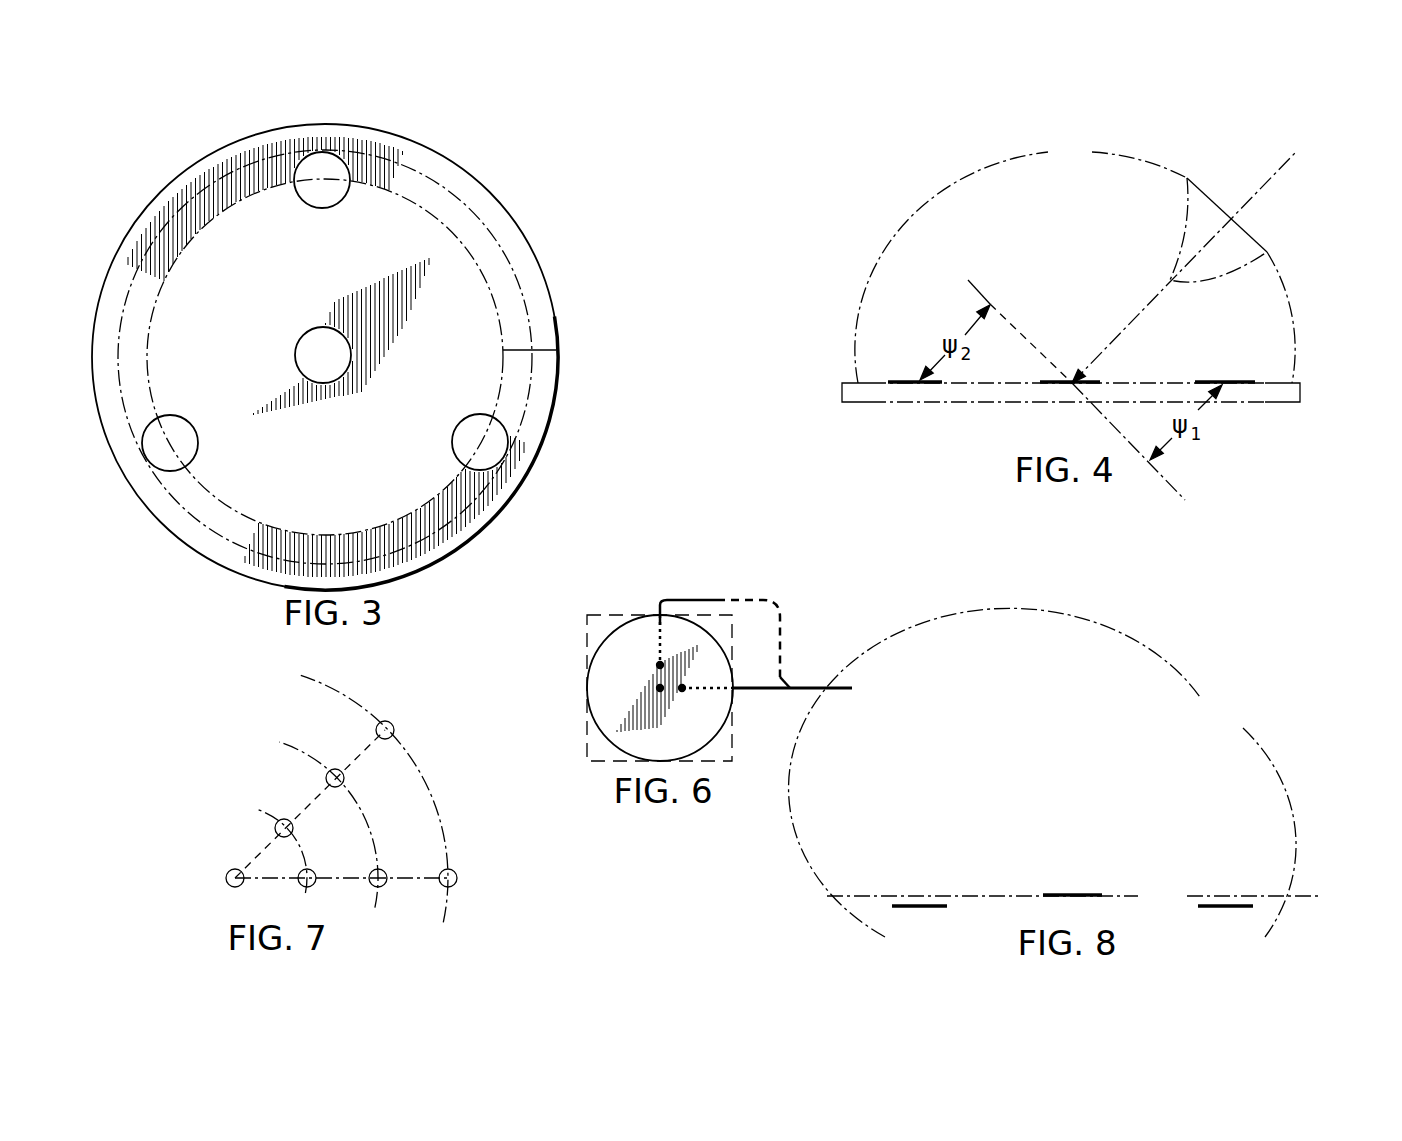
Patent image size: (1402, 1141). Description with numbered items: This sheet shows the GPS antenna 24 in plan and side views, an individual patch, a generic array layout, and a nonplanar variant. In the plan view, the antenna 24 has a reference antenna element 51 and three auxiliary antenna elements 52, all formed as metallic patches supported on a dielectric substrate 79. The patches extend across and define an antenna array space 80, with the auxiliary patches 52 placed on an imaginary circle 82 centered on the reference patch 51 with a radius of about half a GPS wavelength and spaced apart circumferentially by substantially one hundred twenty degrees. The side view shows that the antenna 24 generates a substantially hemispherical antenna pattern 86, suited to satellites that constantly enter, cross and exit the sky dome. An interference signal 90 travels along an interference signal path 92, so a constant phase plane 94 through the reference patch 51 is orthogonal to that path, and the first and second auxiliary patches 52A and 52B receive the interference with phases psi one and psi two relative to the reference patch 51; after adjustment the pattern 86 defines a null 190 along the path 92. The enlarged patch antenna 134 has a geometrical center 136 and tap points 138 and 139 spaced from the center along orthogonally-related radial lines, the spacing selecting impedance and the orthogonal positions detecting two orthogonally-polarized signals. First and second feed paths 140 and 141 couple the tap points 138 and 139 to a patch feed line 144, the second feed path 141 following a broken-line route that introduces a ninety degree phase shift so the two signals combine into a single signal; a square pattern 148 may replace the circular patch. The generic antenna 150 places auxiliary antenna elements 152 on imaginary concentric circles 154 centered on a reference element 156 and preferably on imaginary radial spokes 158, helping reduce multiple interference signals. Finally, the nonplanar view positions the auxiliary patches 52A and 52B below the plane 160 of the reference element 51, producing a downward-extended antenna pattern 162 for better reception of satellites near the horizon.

In FIG. 3, the antenna 24 is at (520, 213).
In FIG. 4, the antenna 24 is at (830, 375).
In FIG. 3, the reference antenna element 51 is at (352, 357).
In FIG. 4, the reference antenna element 51 is at (1042, 383).
In FIG. 8, the reference antenna element 51 is at (1067, 895).
In FIG. 3, the auxiliary antenna elements 52 is at (497, 421).
In FIG. 4, the first auxiliary patch 52A is at (1240, 382).
In FIG. 8, the first auxiliary patch 52A is at (1238, 903).
In FIG. 4, the second auxiliary patch 52B is at (912, 380).
In FIG. 8, the second auxiliary patch 52B is at (908, 903).
In FIG. 3, the dielectric substrate 79 is at (512, 500).
In FIG. 4, the dielectric substrate 79 is at (1302, 392).
In FIG. 3, the antenna array space 80 is at (540, 324).
In FIG. 3, the imaginary circle 82 is at (556, 350).
In FIG. 4, the antenna pattern 86 is at (1075, 260).
In FIG. 4, the interference signal 90 is at (1240, 190).
In FIG. 4, the interference signal path 92 is at (1110, 343).
In FIG. 4, the constant phase plane 94 is at (1050, 383).
In FIG. 4, the null 190 is at (1185, 228).
In FIG. 6, the patch antenna 134 is at (583, 642).
In FIG. 6, the geometrical center 136 is at (657, 688).
In FIG. 6, the tap point 138 is at (683, 693).
In FIG. 6, the tap point 139 is at (657, 665).
In FIG. 6, the first feed path 140 is at (758, 688).
In FIG. 6, the second feed path 141 is at (739, 600).
In FIG. 6, the patch feed line 144 is at (820, 688).
In FIG. 6, the square pattern 148 is at (623, 615).
In FIG. 7, the generic antenna 150 is at (232, 759).
In FIG. 7, the auxiliary antenna elements 152 is at (457, 876).
In FIG. 7, the imaginary concentric circles 154 is at (446, 843).
In FIG. 7, the reference element 156 is at (226, 878).
In FIG. 7, the imaginary radial spokes 158 is at (344, 770).
In FIG. 8, the plane 160 is at (1073, 896).
In FIG. 8, the antenna pattern 162 is at (1043, 772).